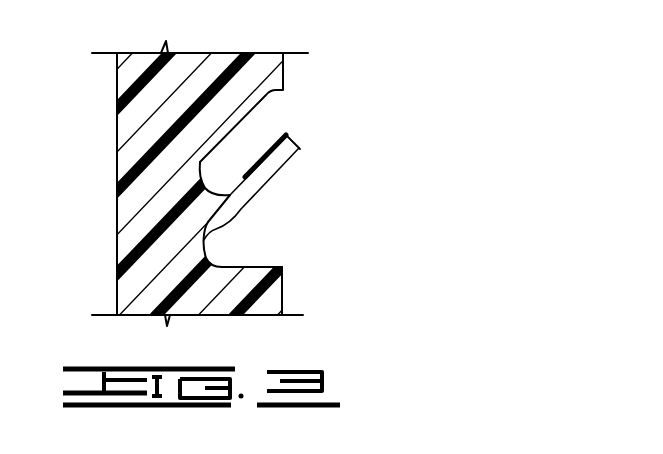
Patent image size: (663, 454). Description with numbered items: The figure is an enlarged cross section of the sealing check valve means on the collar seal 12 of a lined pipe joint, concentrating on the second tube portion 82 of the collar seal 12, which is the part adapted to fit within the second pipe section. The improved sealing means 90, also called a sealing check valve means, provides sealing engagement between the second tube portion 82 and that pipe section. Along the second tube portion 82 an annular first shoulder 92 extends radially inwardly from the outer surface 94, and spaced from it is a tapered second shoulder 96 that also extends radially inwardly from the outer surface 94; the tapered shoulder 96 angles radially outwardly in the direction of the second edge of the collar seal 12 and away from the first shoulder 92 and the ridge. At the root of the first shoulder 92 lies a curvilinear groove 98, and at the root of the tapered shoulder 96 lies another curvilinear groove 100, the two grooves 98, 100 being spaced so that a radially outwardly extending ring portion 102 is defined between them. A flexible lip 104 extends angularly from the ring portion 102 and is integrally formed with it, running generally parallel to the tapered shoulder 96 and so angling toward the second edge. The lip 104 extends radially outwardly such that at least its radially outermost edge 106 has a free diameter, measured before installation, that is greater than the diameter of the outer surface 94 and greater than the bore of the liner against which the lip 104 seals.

The collar seal 12 is at (270, 185).
The second tube portion 82 is at (157, 97).
The sealing means 90 is at (302, 167).
The first shoulder 92 is at (263, 268).
The outer surface 94 is at (283, 290).
The tapered second shoulder 96 is at (290, 90).
The curvilinear groove 98 is at (204, 254).
The curvilinear groove 100 is at (204, 170).
The ring portion 102 is at (216, 208).
The flexible lip 104 is at (292, 141).
The radially outermost edge 106 is at (296, 147).